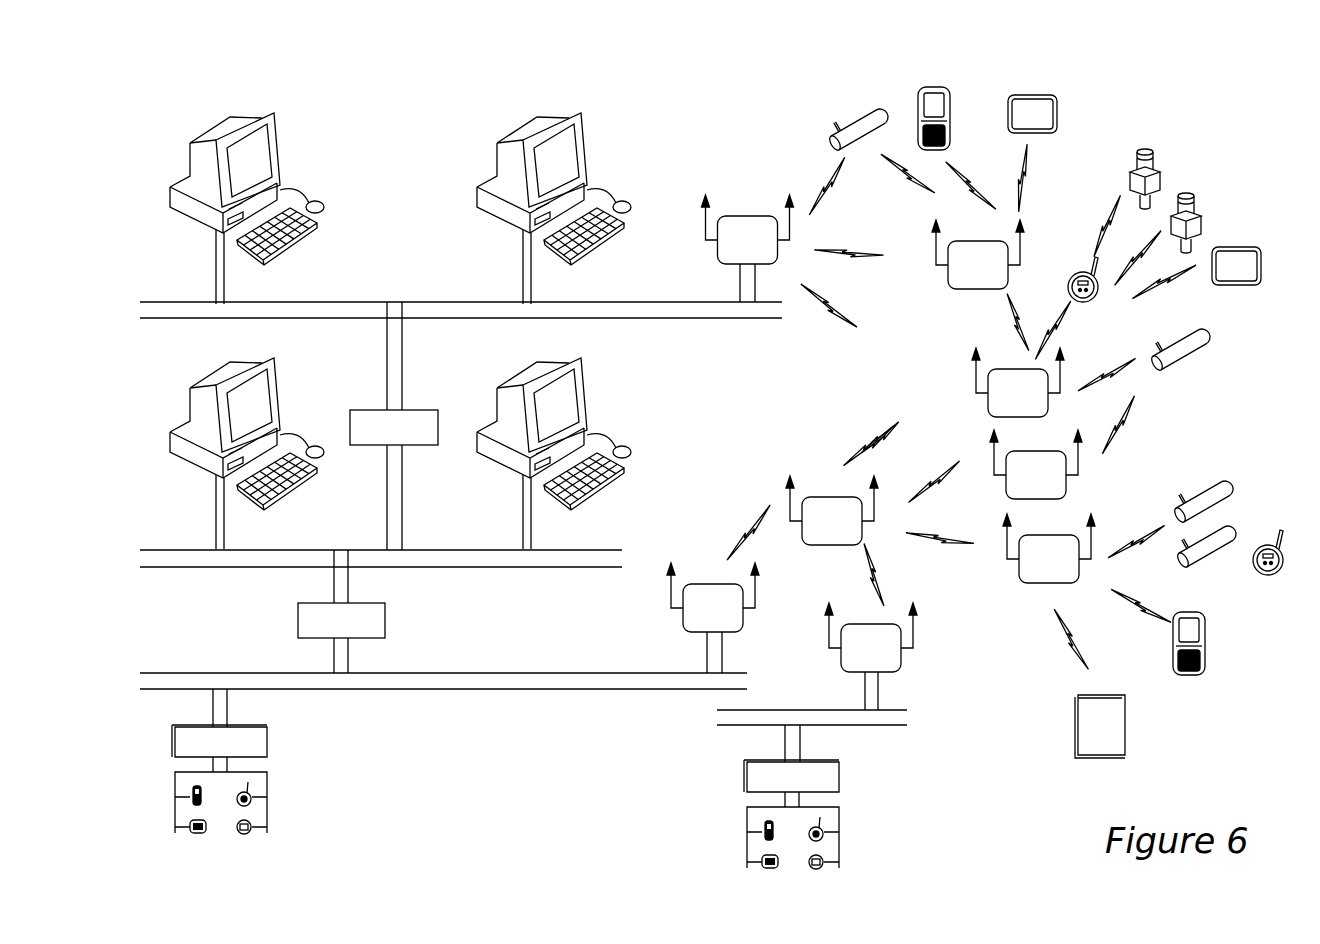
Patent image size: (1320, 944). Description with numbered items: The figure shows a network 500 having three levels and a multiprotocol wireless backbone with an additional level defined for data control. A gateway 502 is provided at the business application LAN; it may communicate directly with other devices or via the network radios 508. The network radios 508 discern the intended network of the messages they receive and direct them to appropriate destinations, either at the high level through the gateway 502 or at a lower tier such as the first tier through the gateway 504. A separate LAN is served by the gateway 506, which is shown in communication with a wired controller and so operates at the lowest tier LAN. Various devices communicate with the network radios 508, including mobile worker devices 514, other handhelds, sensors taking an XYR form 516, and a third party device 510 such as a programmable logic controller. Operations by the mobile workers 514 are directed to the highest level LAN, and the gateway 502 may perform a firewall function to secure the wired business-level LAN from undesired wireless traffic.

The network 500 is at (399, 150).
The gateway 502 is at (718, 257).
The gateway 504 is at (683, 626).
The gateway 506 is at (900, 668).
The network radios 508 is at (948, 283).
The third party device 510 is at (1125, 740).
The mobile worker device 514 is at (1057, 113).
The sensor 516 is at (1151, 152).